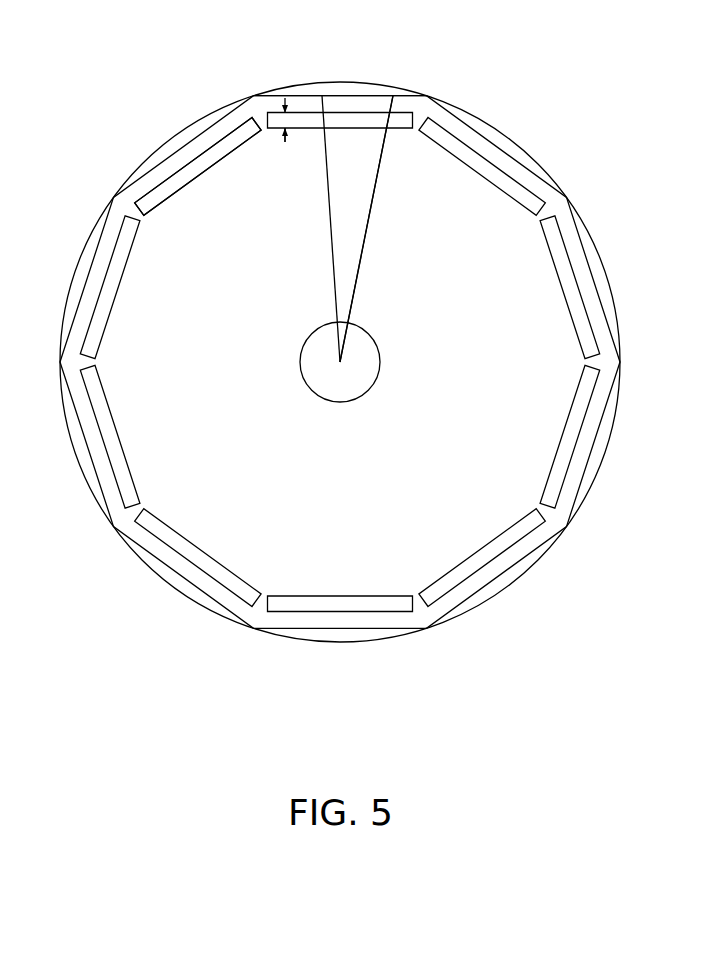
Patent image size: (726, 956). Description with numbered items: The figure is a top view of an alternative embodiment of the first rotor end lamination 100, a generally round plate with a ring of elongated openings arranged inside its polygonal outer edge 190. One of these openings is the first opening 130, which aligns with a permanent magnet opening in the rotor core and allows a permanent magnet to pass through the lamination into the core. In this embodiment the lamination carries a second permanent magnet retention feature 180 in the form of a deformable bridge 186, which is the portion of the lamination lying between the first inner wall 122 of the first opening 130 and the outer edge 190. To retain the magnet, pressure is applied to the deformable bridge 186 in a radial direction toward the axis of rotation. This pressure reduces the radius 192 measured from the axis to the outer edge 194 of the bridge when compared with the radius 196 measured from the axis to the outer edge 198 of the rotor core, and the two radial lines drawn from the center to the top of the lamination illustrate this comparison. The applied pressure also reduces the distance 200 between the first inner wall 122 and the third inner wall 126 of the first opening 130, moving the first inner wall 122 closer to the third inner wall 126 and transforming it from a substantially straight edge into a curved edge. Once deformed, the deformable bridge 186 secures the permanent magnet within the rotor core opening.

The first rotor end lamination 100 is at (619, 320).
The second permanent magnet retention feature 180 is at (243, 50).
The outer edge 190 is at (568, 530).
The first opening 130 is at (410, 112).
The third inner wall 126 is at (258, 130).
The deformable bridge 186 is at (348, 100).
The outer edge of bridge 194 is at (298, 92).
The outer edge of rotor core 198 is at (383, 90).
The radius 192 is at (337, 213).
The radius 196 is at (362, 272).
The first inner wall 122 is at (284, 130).
The distance 200 is at (288, 136).